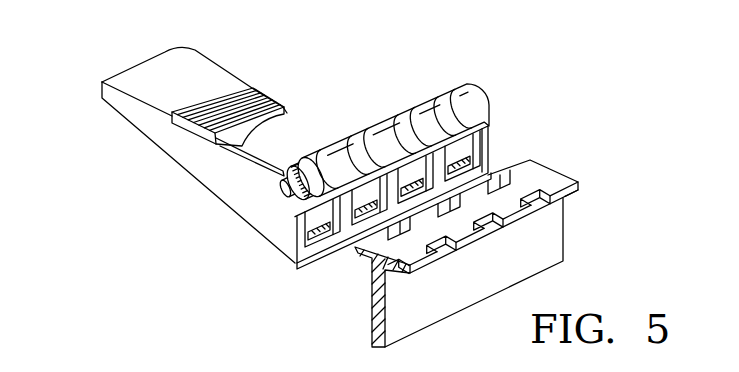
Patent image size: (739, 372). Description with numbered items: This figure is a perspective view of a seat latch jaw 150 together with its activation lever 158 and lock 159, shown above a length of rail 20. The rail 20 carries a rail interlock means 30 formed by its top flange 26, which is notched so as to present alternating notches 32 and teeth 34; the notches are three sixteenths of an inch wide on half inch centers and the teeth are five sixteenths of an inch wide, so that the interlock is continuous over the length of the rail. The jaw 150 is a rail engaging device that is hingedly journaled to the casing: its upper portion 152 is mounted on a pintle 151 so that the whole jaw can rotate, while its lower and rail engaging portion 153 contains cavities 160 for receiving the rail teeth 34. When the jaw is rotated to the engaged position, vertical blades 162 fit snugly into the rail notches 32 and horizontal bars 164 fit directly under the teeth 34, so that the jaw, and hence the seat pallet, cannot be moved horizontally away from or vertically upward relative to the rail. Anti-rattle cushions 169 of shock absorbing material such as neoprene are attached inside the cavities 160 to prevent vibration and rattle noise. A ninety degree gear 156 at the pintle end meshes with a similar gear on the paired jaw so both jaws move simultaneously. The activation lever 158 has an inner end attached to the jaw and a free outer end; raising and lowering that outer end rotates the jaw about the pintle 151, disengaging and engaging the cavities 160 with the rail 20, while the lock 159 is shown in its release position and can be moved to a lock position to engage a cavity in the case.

The rail 20 is at (502, 285).
The top flange 26 is at (403, 278).
The rail interlock means 30 is at (515, 205).
The notches 32 is at (556, 203).
The teeth 34 is at (566, 186).
The seat latch jaw 150 is at (445, 78).
The pintle 151 is at (280, 190).
The upper portion 152 is at (490, 82).
The lower and rail engaging portion 153 is at (265, 257).
The ninety degree gear 156 is at (298, 163).
The activation lever 158 is at (180, 68).
The lock 159 is at (238, 114).
The cavities 160 is at (303, 230).
The vertical blades 162 is at (508, 148).
The horizontal bars 164 is at (345, 246).
The anti-rattle cushions 169 is at (323, 238).